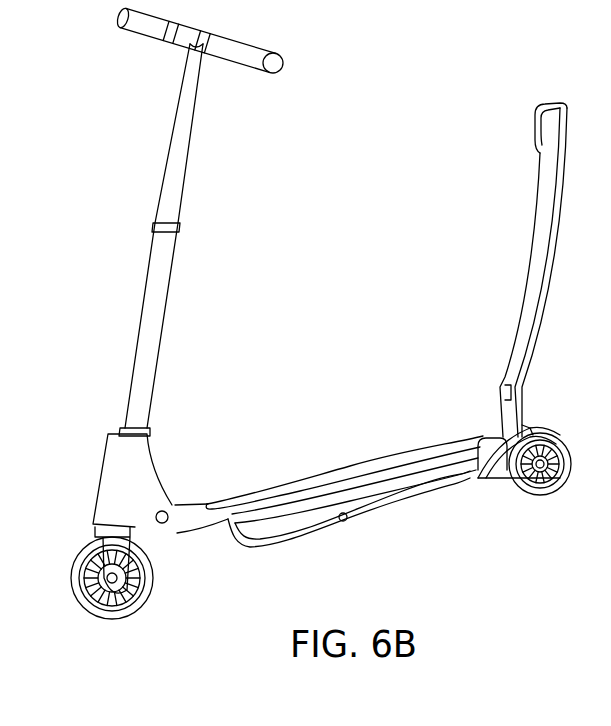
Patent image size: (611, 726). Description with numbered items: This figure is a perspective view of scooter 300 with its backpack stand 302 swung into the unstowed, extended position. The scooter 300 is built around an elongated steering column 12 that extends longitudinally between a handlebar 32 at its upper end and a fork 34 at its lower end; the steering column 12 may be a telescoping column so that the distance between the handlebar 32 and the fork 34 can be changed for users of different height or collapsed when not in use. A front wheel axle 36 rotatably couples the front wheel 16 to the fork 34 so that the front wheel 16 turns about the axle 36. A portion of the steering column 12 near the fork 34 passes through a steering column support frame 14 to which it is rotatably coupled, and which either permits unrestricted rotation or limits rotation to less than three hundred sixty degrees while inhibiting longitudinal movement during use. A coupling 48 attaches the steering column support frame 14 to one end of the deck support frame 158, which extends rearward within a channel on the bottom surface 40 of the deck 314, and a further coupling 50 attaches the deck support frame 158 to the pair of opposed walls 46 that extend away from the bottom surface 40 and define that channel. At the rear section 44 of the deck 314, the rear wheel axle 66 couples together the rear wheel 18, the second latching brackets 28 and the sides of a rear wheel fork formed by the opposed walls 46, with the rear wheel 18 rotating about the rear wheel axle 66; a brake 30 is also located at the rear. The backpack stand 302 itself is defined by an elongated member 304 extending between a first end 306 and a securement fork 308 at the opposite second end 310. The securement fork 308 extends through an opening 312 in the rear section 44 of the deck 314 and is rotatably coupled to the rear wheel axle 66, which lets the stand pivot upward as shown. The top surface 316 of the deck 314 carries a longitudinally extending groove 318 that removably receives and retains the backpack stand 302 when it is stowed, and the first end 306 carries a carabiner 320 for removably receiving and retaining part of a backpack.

The steering column 12 is at (173, 257).
The steering column support frame 14 is at (156, 446).
The front wheel 16 is at (145, 585).
The rear wheel 18 is at (527, 496).
The second latching brackets 28 is at (506, 392).
The brake 30 is at (500, 435).
The handlebar 32 is at (230, 89).
The fork 34 is at (97, 533).
The front wheel axle 36 is at (114, 586).
The bottom surface 40 is at (393, 512).
The rear section 44 is at (460, 430).
The opposed walls 46 is at (282, 533).
The coupling 48 is at (168, 510).
The coupling 50 is at (346, 526).
The rear wheel axle 66 is at (548, 474).
The deck support frame 158 is at (204, 531).
The scooter 300 is at (335, 332).
The backpack stand 302 is at (505, 285).
The elongated member 304 is at (530, 243).
The first end 306 is at (533, 98).
The securement fork 308 is at (490, 381).
The second end 310 is at (548, 397).
The opening 312 is at (488, 470).
The deck 314 is at (379, 440).
The top surface 316 is at (345, 467).
The longitudinally extending groove 318 is at (292, 485).
The carabiner 320 is at (533, 127).